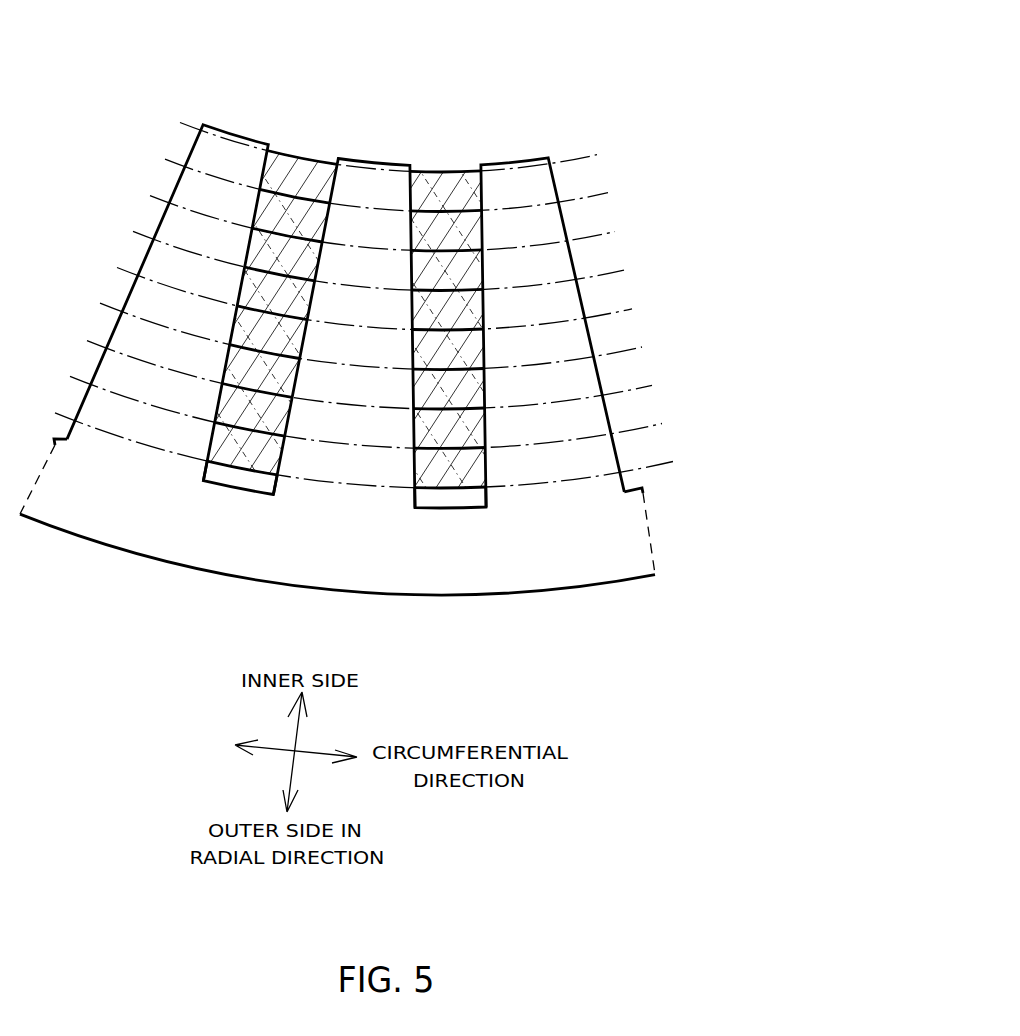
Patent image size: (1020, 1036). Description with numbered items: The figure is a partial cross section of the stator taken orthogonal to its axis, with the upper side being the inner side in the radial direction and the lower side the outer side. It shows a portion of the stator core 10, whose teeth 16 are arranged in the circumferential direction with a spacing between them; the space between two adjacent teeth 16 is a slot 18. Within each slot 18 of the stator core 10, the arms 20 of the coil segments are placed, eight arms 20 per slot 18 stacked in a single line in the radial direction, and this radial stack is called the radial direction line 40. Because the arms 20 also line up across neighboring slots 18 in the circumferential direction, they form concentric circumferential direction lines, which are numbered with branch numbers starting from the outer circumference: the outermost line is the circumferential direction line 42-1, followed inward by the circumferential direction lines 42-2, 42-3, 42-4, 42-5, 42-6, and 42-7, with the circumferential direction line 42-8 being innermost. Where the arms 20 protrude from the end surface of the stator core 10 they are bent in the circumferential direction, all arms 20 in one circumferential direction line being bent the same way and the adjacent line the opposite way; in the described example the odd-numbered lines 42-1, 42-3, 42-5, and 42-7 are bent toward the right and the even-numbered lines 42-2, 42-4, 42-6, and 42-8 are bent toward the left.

The stator core 10 is at (545, 555).
The teeth 16 is at (230, 155).
The slot 18 is at (238, 482).
The arm 20 is at (263, 173).
The radial direction line 40 is at (304, 126).
The circumferential direction line 42-1 is at (660, 439).
The circumferential direction line 42-2 is at (650, 399).
The circumferential direction line 42-3 is at (640, 361).
The circumferential direction line 42-4 is at (630, 323).
The circumferential direction line 42-5 is at (620, 284).
The circumferential direction line 42-6 is at (610, 246).
The circumferential direction line 42-7 is at (600, 208).
The circumferential direction line 42-8 is at (591, 169).